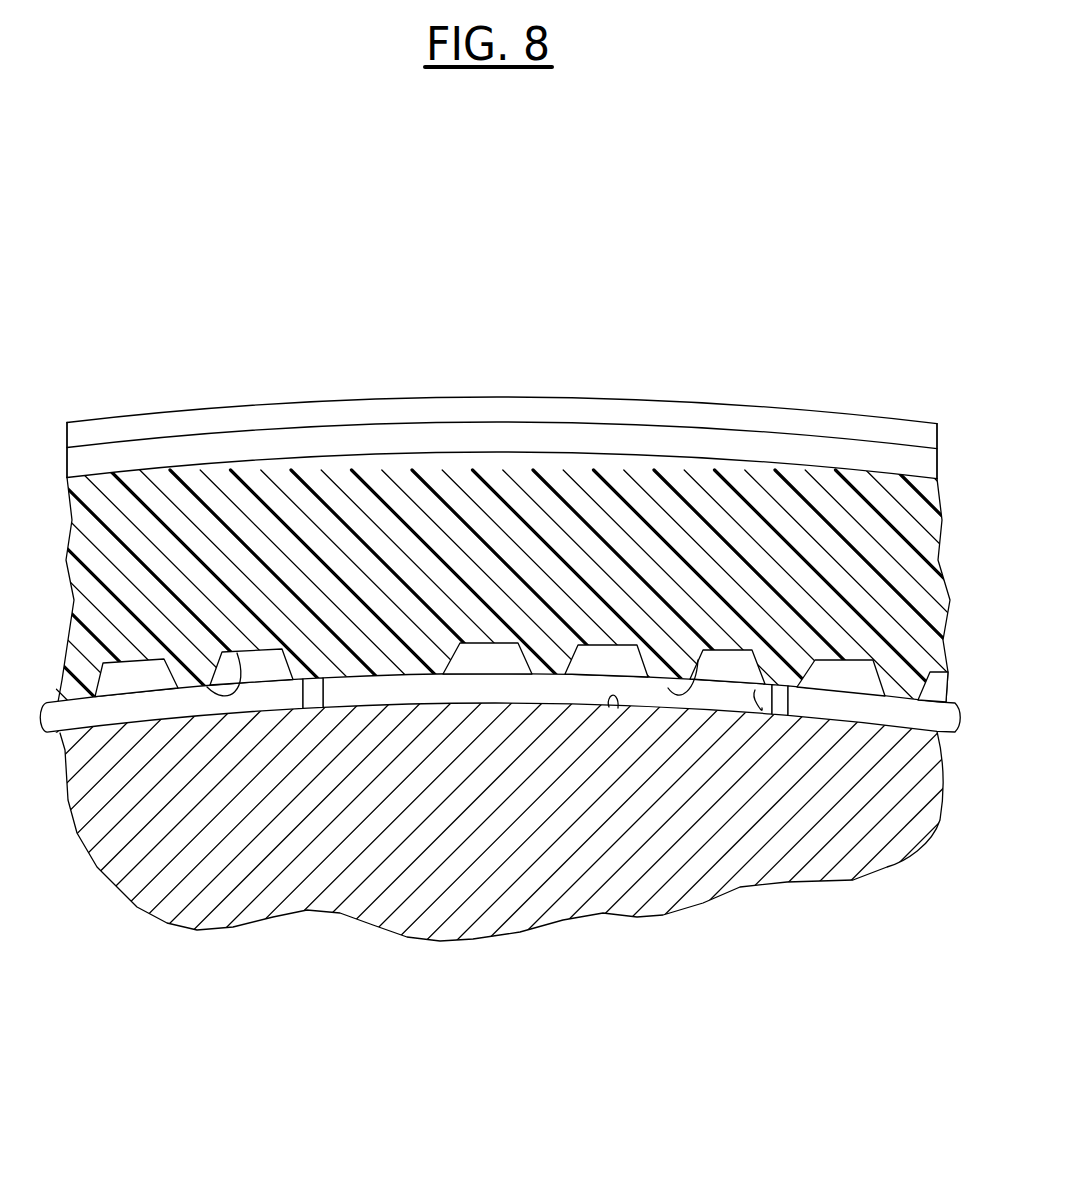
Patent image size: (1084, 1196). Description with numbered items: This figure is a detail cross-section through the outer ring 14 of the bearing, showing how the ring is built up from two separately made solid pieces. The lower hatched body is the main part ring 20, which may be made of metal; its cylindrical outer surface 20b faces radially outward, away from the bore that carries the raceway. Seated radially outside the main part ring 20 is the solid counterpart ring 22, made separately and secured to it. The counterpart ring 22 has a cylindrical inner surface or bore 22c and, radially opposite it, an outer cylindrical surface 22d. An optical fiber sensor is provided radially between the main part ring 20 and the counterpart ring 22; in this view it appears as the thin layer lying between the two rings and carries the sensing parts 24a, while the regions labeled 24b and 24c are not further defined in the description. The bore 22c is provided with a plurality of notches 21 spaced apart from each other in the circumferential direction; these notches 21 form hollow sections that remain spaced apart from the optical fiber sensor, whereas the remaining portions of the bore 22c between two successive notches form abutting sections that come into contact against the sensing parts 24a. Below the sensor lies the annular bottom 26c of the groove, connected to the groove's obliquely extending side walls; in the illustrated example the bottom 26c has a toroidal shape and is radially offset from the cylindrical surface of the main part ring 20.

The outer ring 14 is at (785, 339).
The main part ring 20 is at (494, 390).
The cylindrical outer surface 20b is at (448, 396).
The notches 21 is at (223, 667).
The counterpart ring 22 is at (375, 442).
The bore 22c is at (237, 653).
The outer cylindrical surface 22d is at (543, 437).
The sensing parts 24a is at (270, 697).
The second electrode segment 24b is at (582, 688).
The third electrode segment 24c is at (892, 713).
The bottom 26c is at (618, 708).